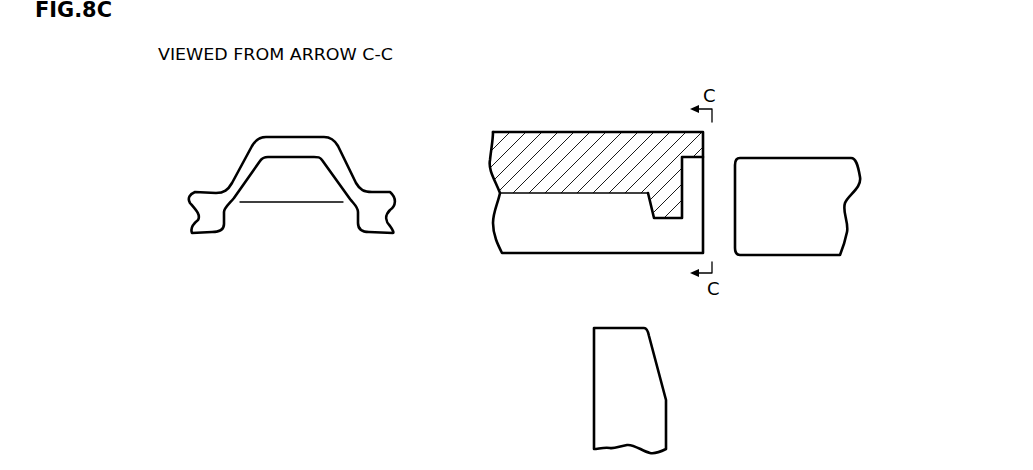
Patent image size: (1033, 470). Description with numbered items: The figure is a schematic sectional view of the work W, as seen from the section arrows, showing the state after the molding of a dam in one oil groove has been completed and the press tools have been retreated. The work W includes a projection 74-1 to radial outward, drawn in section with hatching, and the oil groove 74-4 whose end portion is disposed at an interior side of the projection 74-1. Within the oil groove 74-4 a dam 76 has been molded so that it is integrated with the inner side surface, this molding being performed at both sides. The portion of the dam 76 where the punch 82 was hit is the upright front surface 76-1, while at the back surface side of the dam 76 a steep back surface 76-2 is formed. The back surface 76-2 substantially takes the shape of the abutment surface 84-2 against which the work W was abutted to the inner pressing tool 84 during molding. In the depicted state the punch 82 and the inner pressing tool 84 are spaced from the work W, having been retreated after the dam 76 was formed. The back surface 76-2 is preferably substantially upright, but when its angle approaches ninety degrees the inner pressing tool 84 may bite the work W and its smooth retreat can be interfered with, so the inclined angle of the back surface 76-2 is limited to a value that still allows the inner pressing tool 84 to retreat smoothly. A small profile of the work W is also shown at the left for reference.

The work W is at (227, 157).
The projection 74-1 is at (282, 142).
The oil groove 74-4 is at (513, 240).
The dam 76 is at (302, 188).
The upright front surface 76-1 is at (682, 195).
The steep back surface 76-2 is at (653, 208).
The punch 82 is at (767, 177).
The inner pressing tool 84 is at (608, 372).
The abutment surface 84-2 is at (655, 352).